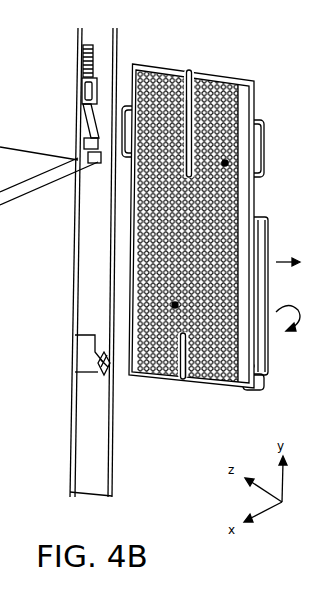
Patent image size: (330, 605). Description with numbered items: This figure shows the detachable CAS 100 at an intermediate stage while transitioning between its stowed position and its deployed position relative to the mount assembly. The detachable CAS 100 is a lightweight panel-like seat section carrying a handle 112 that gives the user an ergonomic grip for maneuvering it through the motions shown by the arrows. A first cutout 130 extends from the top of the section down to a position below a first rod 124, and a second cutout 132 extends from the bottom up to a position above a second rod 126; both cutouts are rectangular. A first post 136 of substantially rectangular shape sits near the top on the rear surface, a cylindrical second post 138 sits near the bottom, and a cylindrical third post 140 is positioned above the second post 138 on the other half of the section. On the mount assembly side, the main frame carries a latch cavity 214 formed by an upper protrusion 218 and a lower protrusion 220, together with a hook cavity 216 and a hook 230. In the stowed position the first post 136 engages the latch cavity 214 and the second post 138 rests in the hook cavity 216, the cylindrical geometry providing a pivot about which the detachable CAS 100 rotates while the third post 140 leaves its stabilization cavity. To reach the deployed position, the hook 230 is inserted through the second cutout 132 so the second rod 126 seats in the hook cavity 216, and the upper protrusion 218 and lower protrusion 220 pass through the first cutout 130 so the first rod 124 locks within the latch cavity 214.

The detachable CAS 100 is at (254, 81).
The handle 112 is at (264, 130).
The first rod 124 is at (188, 150).
The second rod 126 is at (181, 366).
The first cutout 130 is at (190, 73).
The second cutout 132 is at (182, 379).
The first post 136 is at (226, 163).
The second post 138 is at (254, 374).
The third post 140 is at (174, 305).
The latch cavity 214 is at (88, 149).
The hook cavity 216 is at (104, 372).
The upper protrusion 218 is at (84, 138).
The lower protrusion 220 is at (88, 157).
The hook 230 is at (80, 350).